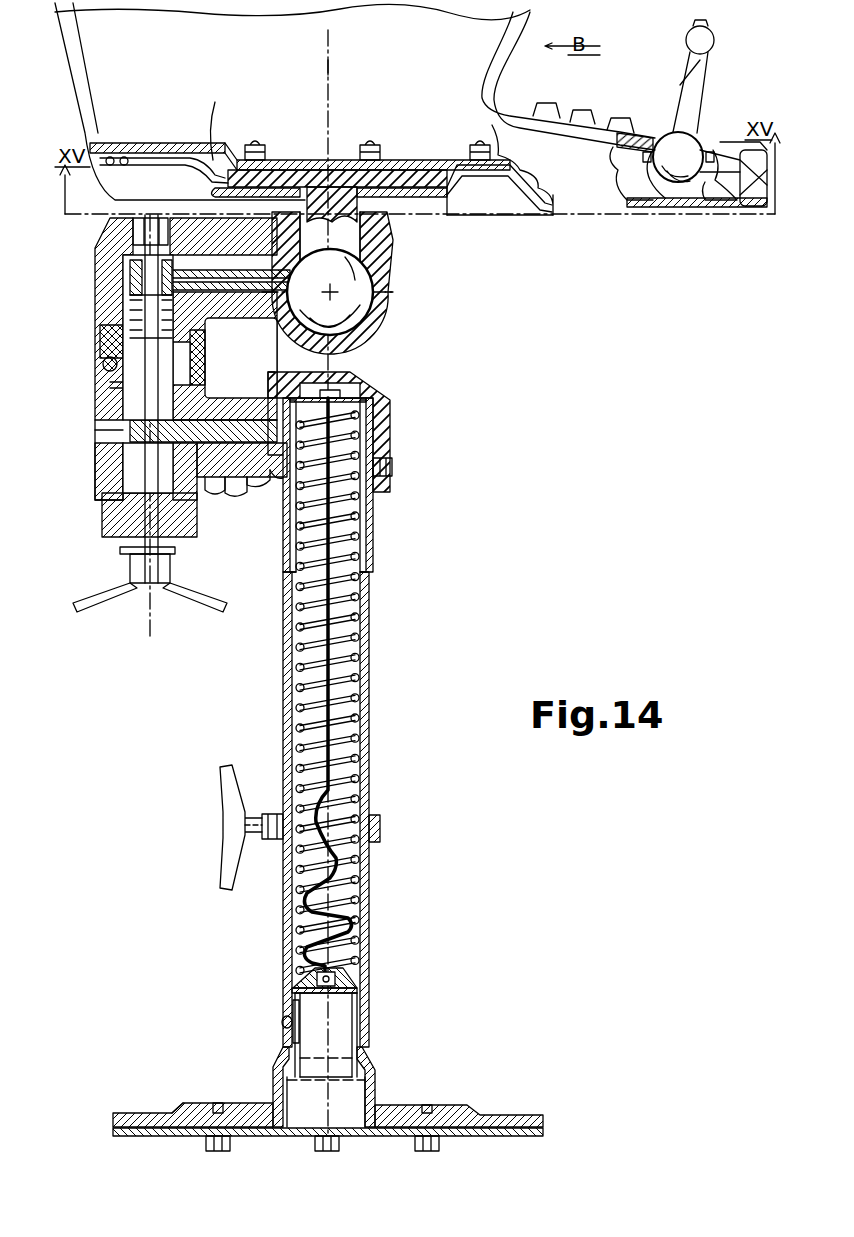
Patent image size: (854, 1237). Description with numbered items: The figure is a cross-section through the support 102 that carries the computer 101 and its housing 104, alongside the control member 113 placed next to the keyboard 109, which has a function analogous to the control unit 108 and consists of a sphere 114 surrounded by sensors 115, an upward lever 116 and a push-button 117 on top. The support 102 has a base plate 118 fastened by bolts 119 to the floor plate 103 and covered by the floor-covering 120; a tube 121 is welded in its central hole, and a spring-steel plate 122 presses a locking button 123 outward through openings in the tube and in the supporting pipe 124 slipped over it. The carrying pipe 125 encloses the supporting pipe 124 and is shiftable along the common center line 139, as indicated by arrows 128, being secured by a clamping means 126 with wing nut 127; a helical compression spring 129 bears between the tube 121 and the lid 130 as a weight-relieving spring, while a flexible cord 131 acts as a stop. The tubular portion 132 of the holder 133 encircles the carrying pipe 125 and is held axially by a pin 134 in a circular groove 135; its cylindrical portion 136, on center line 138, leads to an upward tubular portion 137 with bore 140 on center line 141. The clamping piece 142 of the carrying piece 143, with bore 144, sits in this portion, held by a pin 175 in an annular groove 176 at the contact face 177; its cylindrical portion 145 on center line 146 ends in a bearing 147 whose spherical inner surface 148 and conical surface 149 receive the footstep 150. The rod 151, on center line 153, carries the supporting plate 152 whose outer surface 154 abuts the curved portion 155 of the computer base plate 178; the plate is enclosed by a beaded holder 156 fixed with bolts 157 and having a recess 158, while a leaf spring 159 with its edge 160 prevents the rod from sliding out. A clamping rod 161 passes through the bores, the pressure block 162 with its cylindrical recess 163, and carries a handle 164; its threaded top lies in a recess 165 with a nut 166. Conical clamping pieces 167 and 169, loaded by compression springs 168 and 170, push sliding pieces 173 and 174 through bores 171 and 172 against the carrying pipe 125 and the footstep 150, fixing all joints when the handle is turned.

The computer 101 is at (520, 80).
The support 102 is at (276, 968).
The floor plate 103 is at (540, 1140).
The housing 104 is at (100, 92).
The control unit 108 is at (752, 210).
The keyboard 109 is at (585, 110).
The control member 113 is at (679, 82).
The sphere 114 is at (695, 133).
The sensors 115 is at (638, 158).
The lever 116 is at (702, 90).
The push-button 117 is at (712, 30).
The base plate 118 is at (260, 1103).
The bolts 119 is at (206, 1148).
The floor-covering 120 is at (202, 1103).
The tube 121 is at (375, 1055).
The plate 122 is at (294, 1038).
The locking button 123 is at (281, 1014).
The supporting pipe 124 is at (370, 923).
The carrying pipe 125 is at (372, 660).
The clamping means 126 is at (268, 853).
The wing nut 127 is at (222, 790).
The arrows 128 is at (415, 790).
The helical compression spring 129 is at (362, 540).
The lid 130 is at (375, 378).
The flexible cord 131 is at (340, 758).
The tubular portion 132 is at (392, 415).
The holder 133 is at (268, 485).
The pin 134 is at (394, 468).
The circular groove 135 is at (283, 490).
The cylindrical portion 136 is at (262, 385).
The tubular portion 137 is at (105, 485).
The center line 138 is at (92, 433).
The center line 139 is at (350, 1023).
The bore 140 is at (190, 390).
The center line 141 is at (148, 628).
The clamping piece 142 is at (110, 226).
The carrying piece 143 is at (302, 205).
The bore 144 is at (110, 384).
The cylindrical portion 145 is at (275, 235).
The center line 146 is at (123, 280).
The bearing 147 is at (395, 283).
The inner surface 148 is at (388, 322).
The conical surface 149 is at (377, 228).
The footstep 150 is at (383, 298).
The rod 151 is at (378, 253).
The supporting plate 152 is at (320, 160).
The center line 153 is at (328, 60).
The outer surface 154 is at (466, 163).
The curved portion 155 is at (425, 160).
The holder 156 is at (447, 210).
The bolts 157 is at (256, 143).
The recess 158 is at (296, 186).
The leaf spring 159 is at (157, 145).
The edge 160 is at (217, 115).
The rod 161 is at (140, 395).
The pressure block 162 is at (110, 520).
The cylindrical recess 163 is at (175, 550).
The handle 164 is at (115, 594).
The recess 165 is at (145, 215).
The nut 166 is at (170, 230).
The conical clamping piece 167 is at (130, 436).
The compression spring 168 is at (132, 462).
The conical clamping piece 169 is at (123, 290).
The compression spring 170 is at (130, 314).
The bore 171 is at (240, 455).
The bore 172 is at (250, 305).
The sliding piece 173 is at (255, 470).
The sliding piece 174 is at (286, 293).
The pin 175 is at (103, 364).
The annular groove 176 is at (195, 362).
The contact face 177 is at (100, 340).
The base plate 178 is at (670, 207).